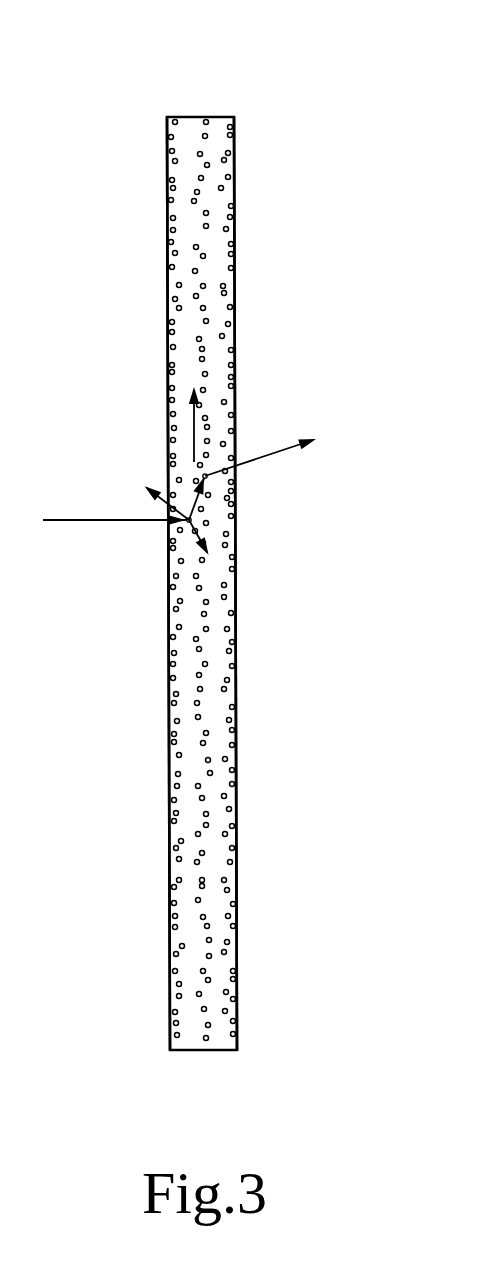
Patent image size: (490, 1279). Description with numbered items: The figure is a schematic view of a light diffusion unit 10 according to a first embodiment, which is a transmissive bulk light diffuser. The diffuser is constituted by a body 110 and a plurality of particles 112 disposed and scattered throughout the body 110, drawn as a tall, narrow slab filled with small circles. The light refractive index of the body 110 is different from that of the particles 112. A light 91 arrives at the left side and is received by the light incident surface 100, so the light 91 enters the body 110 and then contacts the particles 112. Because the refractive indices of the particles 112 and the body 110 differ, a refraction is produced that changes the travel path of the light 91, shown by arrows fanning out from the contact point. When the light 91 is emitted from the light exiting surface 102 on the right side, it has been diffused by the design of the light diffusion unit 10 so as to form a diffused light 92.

The light diffusion unit 10 is at (270, 105).
The light incident surface 100 is at (167, 269).
The light exiting surface 102 is at (237, 299).
The body 110 is at (229, 992).
The particles 112 is at (231, 498).
The light 91 is at (83, 520).
The diffused light 92 is at (275, 450).